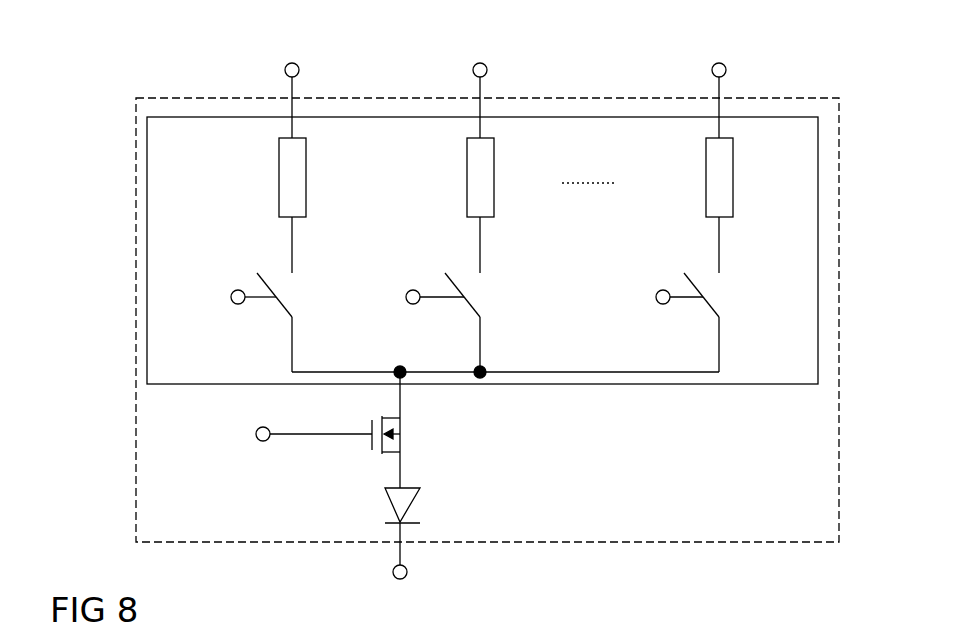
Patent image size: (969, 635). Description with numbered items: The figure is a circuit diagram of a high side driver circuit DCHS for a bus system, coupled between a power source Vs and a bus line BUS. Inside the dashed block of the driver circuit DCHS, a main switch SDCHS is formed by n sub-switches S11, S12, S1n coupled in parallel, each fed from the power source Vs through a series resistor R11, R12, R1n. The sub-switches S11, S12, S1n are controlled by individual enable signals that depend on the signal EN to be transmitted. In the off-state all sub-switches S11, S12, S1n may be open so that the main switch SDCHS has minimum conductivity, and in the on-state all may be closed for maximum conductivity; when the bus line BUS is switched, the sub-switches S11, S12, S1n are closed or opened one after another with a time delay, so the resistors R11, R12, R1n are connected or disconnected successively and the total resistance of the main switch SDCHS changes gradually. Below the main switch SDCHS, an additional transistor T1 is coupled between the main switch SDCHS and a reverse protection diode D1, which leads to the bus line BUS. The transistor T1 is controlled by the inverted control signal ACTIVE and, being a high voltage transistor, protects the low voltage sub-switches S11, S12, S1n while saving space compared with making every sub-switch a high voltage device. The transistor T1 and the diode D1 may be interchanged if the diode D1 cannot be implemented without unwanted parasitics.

The high side driver circuit DCHS is at (487, 307).
The main switch SDCHS is at (482, 272).
The power source Vs is at (505, 85).
The resistor R11 is at (271, 205).
The resistor R12 is at (459, 205).
The resistor R1n is at (691, 205).
The sub-switch S11 is at (281, 322).
The sub-switch S12 is at (462, 322).
The sub-switch S1n is at (707, 322).
The signal to be transmitted EN is at (419, 278).
The additional transistor T1 is at (356, 430).
The inverted control signal ACTIVE is at (253, 414).
The reverse protection diode D1 is at (428, 526).
The bus line BUS is at (399, 589).